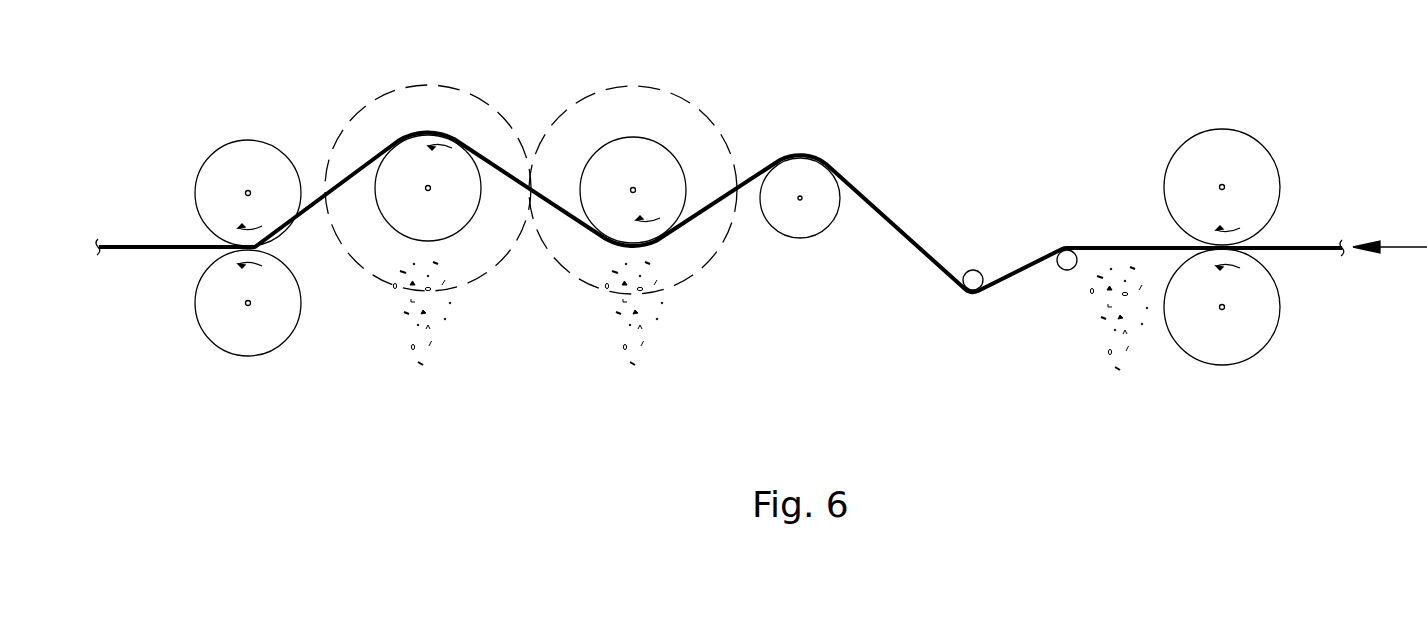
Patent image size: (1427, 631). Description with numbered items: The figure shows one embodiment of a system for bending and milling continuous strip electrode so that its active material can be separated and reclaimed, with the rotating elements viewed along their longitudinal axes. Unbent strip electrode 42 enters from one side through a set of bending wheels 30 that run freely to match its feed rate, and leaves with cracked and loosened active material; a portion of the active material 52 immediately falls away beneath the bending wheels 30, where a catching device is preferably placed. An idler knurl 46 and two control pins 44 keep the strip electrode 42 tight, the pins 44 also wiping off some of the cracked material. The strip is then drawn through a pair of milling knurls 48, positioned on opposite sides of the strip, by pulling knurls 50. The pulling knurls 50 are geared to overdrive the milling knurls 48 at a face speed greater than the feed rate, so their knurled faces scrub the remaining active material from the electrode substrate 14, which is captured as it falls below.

The electrode substrate 14 is at (127, 247).
The bending wheels 30 is at (1258, 133).
The strip electrode 42 is at (1325, 243).
The control pins 44 is at (968, 262).
The idler knurl 46 is at (820, 233).
The milling knurls 48 is at (443, 242).
The pulling knurls 50 is at (237, 135).
The active material 52 is at (633, 357).